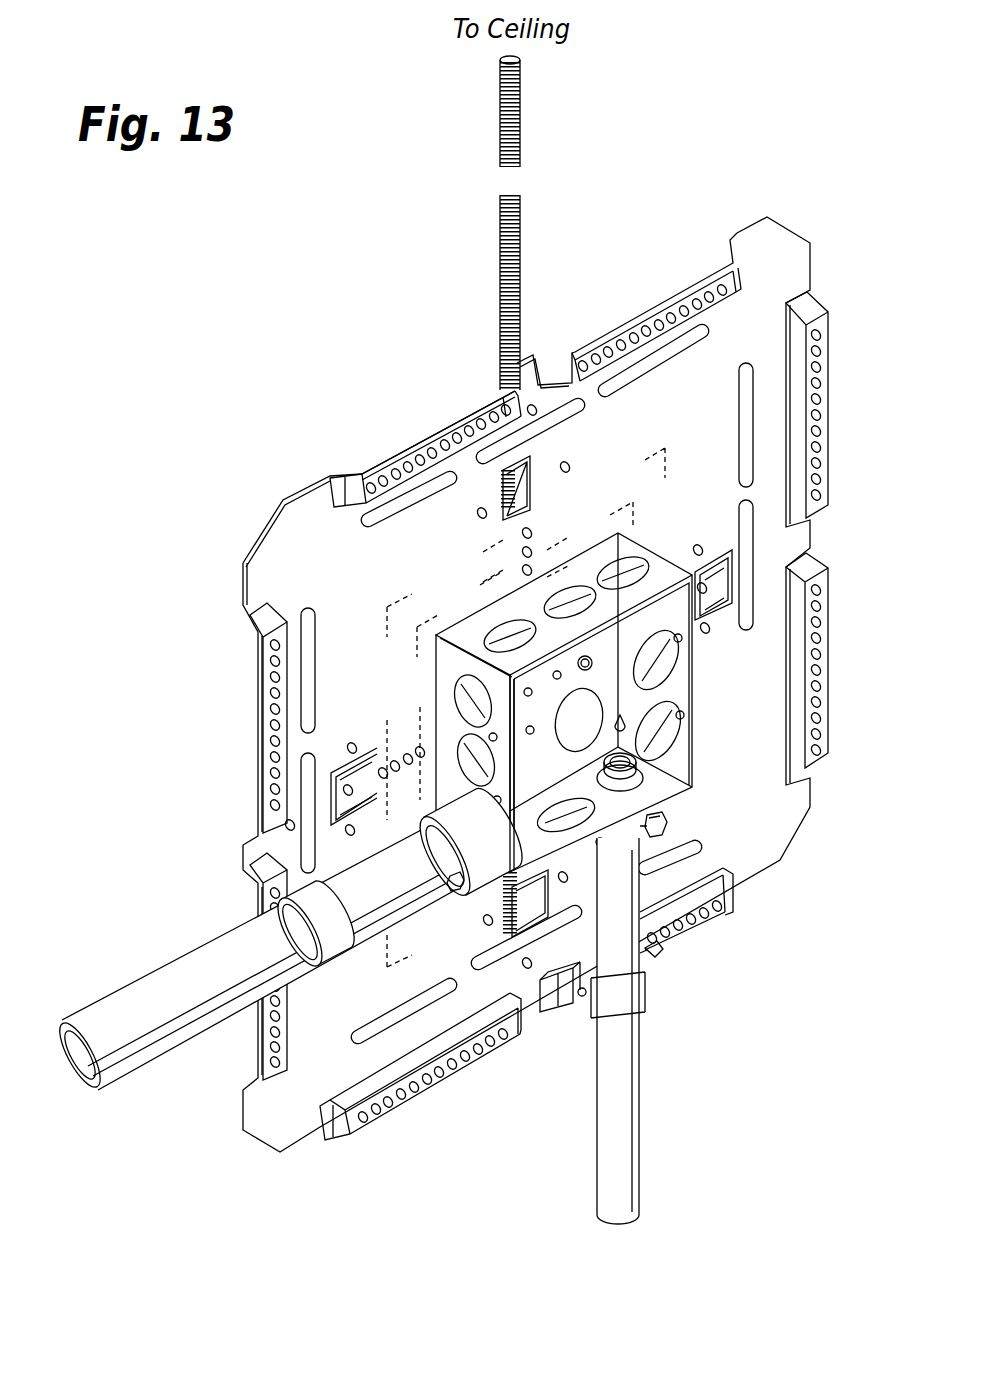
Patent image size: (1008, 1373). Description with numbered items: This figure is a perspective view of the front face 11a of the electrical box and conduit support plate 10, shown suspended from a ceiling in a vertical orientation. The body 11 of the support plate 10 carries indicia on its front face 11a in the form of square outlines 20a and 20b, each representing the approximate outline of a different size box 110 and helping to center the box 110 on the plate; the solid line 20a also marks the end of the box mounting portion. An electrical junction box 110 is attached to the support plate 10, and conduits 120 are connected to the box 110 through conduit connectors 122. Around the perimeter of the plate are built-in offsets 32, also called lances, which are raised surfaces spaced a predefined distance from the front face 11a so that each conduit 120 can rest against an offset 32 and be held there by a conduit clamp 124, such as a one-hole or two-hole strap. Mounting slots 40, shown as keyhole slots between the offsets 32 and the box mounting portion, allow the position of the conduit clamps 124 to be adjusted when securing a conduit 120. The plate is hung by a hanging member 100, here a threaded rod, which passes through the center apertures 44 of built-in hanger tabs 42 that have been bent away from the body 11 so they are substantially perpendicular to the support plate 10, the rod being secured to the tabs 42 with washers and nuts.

The support plate 10 is at (503, 700).
The body 11 is at (240, 545).
The front face 11a is at (298, 498).
The square outline 20a is at (400, 600).
The square outline 20b is at (428, 615).
The built-in offset 32 is at (410, 432).
The mounting slot 40 is at (748, 378).
The hanger tab 42 is at (553, 458).
The center aperture 44 is at (717, 549).
The hanging member 100 is at (534, 237).
The box 110 is at (587, 535).
The conduit 120 is at (150, 1000).
The conduit connector 122 is at (670, 824).
The conduit clamp 124 is at (648, 1002).